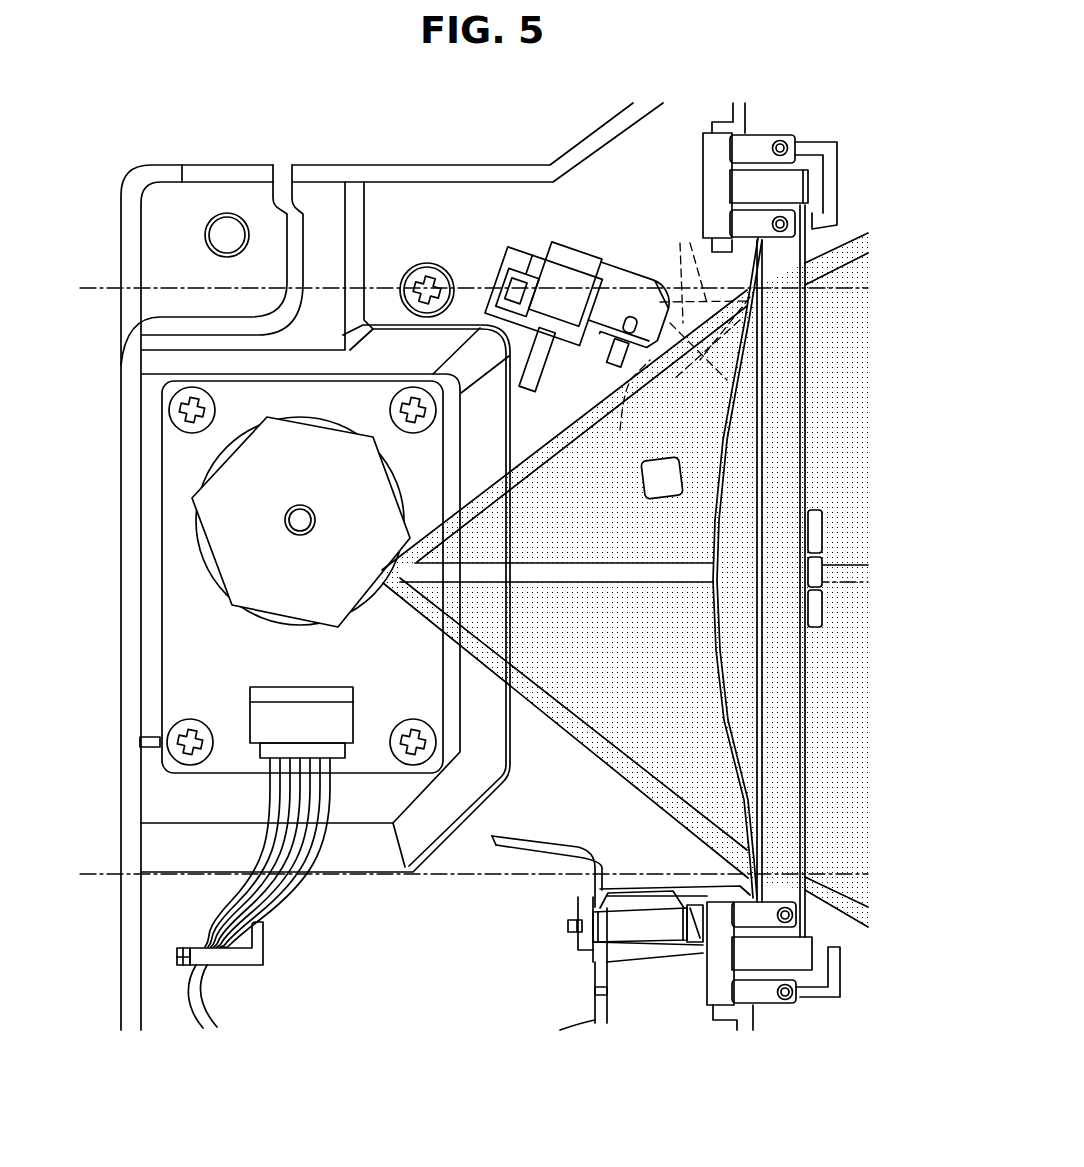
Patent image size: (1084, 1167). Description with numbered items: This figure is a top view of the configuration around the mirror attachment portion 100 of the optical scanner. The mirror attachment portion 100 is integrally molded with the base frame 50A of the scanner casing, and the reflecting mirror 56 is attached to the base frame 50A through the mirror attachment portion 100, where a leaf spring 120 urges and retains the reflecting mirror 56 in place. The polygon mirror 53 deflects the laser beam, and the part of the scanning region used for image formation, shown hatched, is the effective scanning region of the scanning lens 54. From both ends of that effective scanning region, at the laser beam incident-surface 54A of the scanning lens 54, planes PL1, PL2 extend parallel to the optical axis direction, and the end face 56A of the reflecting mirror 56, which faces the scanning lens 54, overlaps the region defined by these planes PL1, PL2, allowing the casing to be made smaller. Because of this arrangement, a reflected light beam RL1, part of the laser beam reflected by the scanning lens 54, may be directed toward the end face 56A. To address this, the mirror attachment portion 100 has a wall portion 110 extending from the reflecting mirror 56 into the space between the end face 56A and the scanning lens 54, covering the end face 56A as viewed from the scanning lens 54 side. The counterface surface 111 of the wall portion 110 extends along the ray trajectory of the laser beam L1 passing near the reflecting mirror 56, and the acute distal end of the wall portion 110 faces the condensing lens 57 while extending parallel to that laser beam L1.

The base frame 50A is at (246, 158).
The polygon mirror 53 is at (208, 548).
The scanning lens 54 is at (806, 727).
The laser beam incident-surface 54A is at (722, 690).
The reflecting mirror 56 is at (623, 319).
The end face 56A is at (660, 308).
The condensing lens 57 is at (654, 930).
The mirror attachment portion 100 is at (545, 314).
The leaf spring 120 is at (565, 284).
The counterface surface 111 is at (650, 466).
The wall portion 110 is at (650, 466).
The laser beam L1 is at (574, 428).
The reflected light beam RL1 is at (685, 325).
The plane PL1 is at (833, 292).
The plane PL2 is at (834, 870).